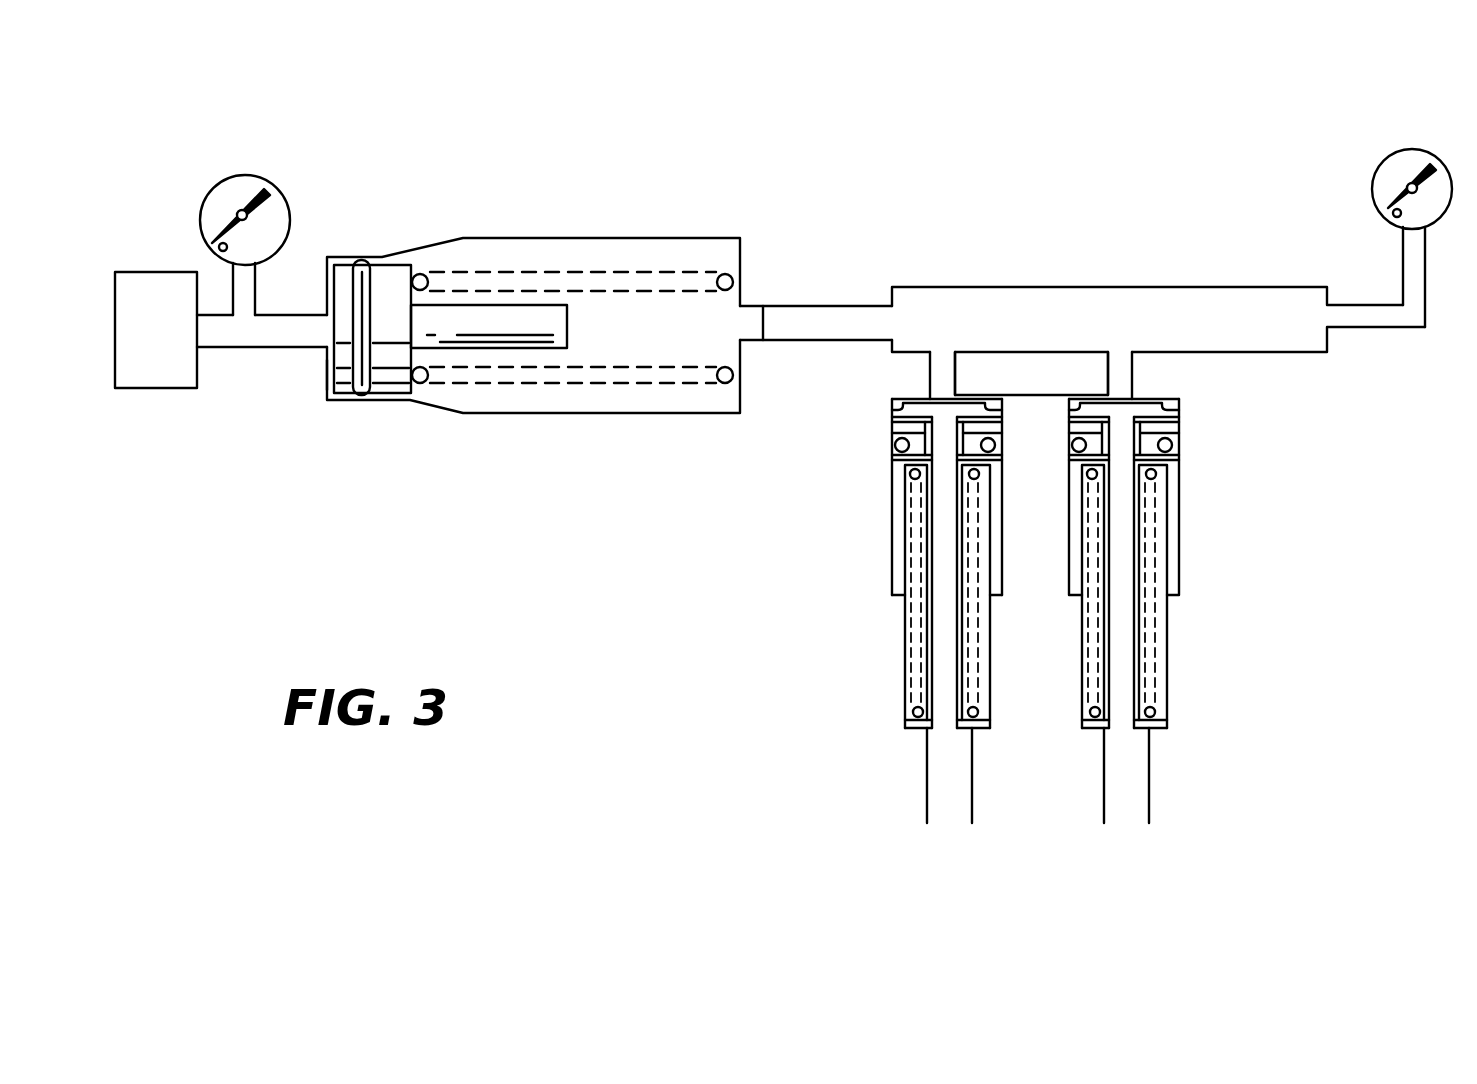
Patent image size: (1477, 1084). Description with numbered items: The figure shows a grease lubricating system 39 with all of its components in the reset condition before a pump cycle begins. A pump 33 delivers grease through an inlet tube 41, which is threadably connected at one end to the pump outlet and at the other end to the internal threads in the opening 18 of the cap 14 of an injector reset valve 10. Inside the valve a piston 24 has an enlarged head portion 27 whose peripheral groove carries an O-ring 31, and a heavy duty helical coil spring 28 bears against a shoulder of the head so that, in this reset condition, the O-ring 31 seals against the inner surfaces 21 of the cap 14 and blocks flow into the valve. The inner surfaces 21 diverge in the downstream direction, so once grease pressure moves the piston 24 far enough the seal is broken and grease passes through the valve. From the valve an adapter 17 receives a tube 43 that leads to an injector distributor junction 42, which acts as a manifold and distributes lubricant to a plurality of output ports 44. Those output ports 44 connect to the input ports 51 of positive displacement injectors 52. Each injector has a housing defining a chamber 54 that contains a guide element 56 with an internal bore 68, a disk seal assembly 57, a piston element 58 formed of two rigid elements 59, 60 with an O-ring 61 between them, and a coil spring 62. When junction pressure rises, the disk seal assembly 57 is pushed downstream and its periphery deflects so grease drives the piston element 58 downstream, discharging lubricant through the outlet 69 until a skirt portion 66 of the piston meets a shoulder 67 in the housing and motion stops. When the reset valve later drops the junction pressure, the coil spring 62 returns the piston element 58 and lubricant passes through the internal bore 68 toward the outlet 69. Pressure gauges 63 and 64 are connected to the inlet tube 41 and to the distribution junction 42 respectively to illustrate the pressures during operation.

The injector reset valve 10 is at (632, 240).
The cap 14 is at (342, 256).
The adapter 17 is at (757, 304).
The opening 18 is at (326, 357).
The inner surfaces 21 is at (405, 258).
The piston 24 is at (473, 306).
The head portion 27 is at (385, 260).
The helical coil spring 28 is at (422, 383).
The O-ring 31 is at (361, 397).
The pump 33 is at (173, 352).
The grease lubricating system 39 is at (697, 582).
The inlet tube 41 is at (268, 348).
The injector distributor junction 42 is at (1005, 287).
The tube 43 is at (828, 306).
The output ports 44 is at (930, 378).
The input ports 51 is at (897, 401).
The injectors 52 is at (892, 560).
The chamber 54 is at (1000, 400).
The guide element 56 is at (1090, 525).
The disk seal assembly 57 is at (1093, 398).
The piston element 58 is at (892, 440).
The rigid element 59 is at (892, 432).
The rigid element 60 is at (892, 470).
The O-ring 61 is at (900, 447).
The coil spring 62 is at (1088, 580).
The pressure gauge 63 is at (250, 176).
The pressure gauge 64 is at (1422, 152).
The skirt portion 66 is at (892, 503).
The shoulder 67 is at (893, 597).
The internal bore 68 is at (1127, 665).
The outlet 69 is at (1128, 722).